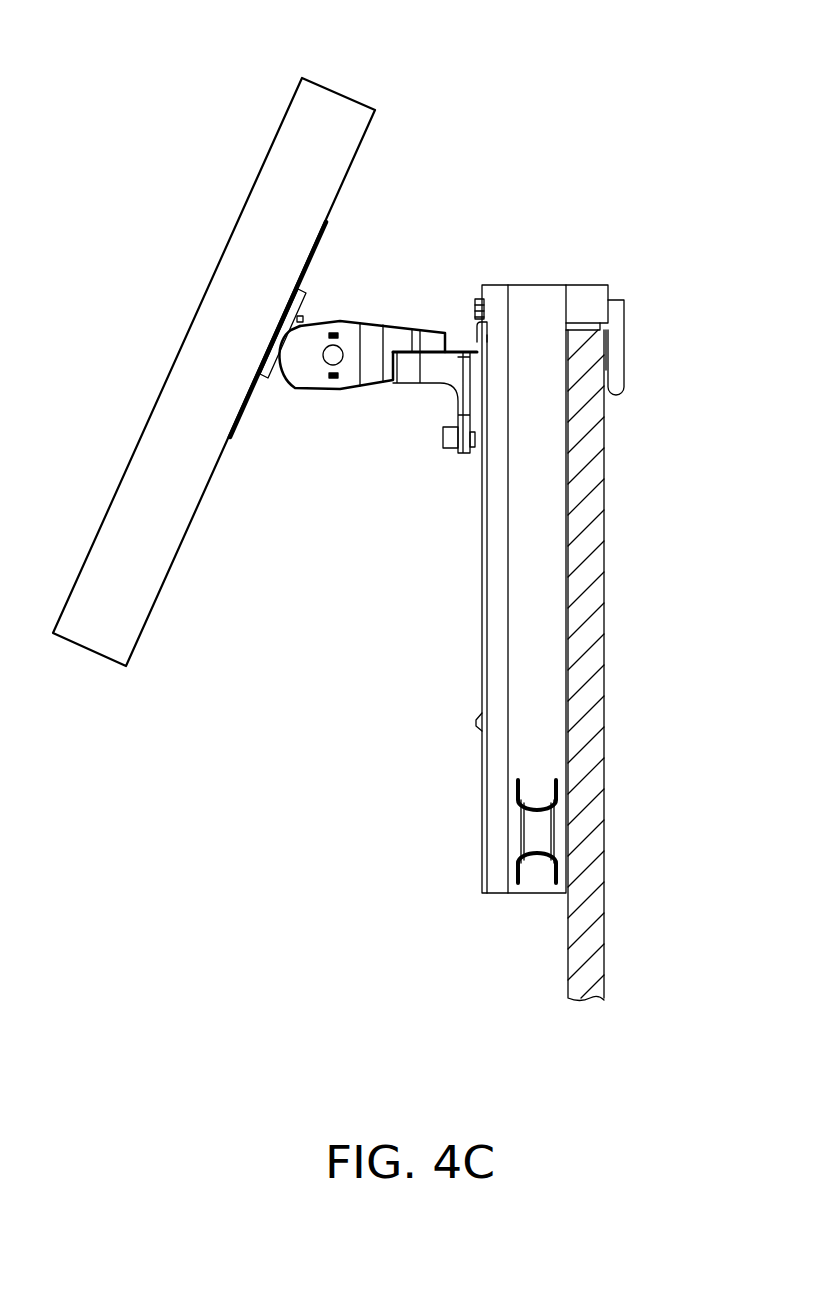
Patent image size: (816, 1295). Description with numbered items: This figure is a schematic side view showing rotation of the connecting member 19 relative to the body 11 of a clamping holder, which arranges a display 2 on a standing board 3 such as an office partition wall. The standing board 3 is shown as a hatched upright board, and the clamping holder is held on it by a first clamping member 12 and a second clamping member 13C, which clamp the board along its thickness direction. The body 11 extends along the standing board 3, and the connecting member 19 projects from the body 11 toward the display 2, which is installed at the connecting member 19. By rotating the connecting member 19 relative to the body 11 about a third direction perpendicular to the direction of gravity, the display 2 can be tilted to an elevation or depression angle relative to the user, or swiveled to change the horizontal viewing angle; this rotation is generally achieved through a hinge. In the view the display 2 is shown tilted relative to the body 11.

The display 2 is at (340, 108).
The standing board 3 is at (588, 570).
The body 11 is at (530, 298).
The first clamping member 12 is at (590, 298).
The second clamping member 13C is at (616, 352).
The connecting member 19 is at (321, 240).